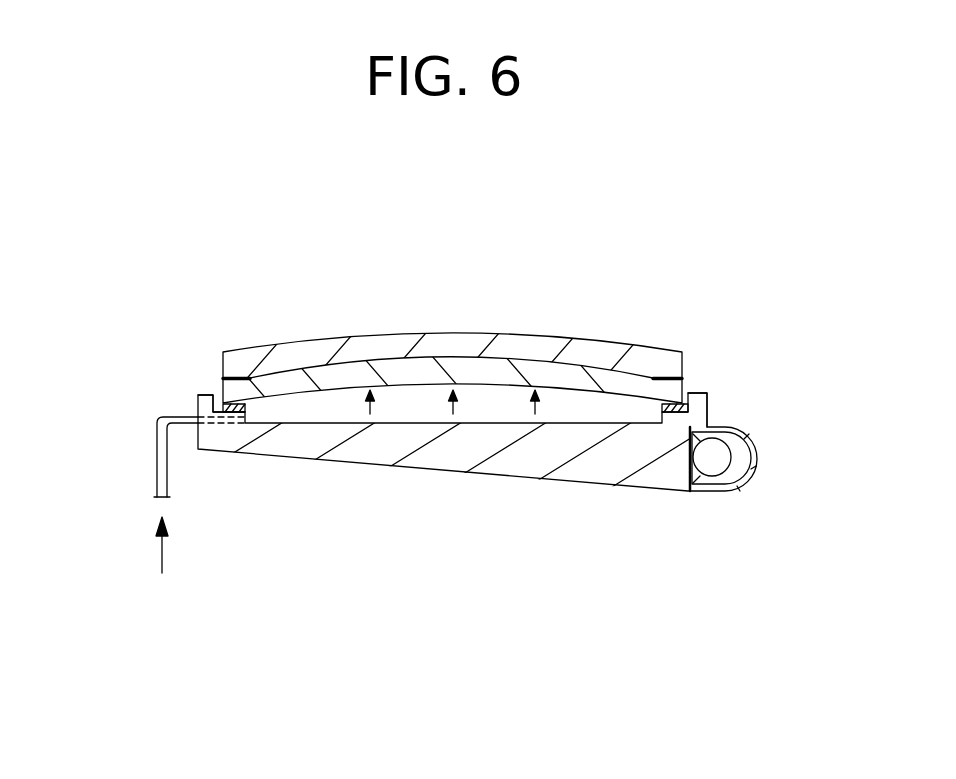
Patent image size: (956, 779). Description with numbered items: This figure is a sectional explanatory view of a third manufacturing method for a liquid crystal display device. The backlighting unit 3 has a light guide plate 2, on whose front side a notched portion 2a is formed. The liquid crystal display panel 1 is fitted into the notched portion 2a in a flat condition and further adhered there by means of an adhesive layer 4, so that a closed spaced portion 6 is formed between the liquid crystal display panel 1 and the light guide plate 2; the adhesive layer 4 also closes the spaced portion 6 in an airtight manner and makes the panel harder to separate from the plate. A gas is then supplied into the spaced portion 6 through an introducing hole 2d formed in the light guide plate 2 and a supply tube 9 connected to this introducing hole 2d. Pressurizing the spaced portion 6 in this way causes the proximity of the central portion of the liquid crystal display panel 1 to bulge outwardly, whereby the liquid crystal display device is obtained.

The liquid crystal display panel 1 is at (452, 296).
The spaced portion 6 is at (452, 306).
The light guide plate 2 is at (497, 507).
The notched portion 2a is at (688, 392).
The introducing hole 2d is at (248, 494).
The backlighting unit 3 is at (759, 586).
The adhesive layer 4 is at (455, 511).
The supply tube 9 is at (184, 431).